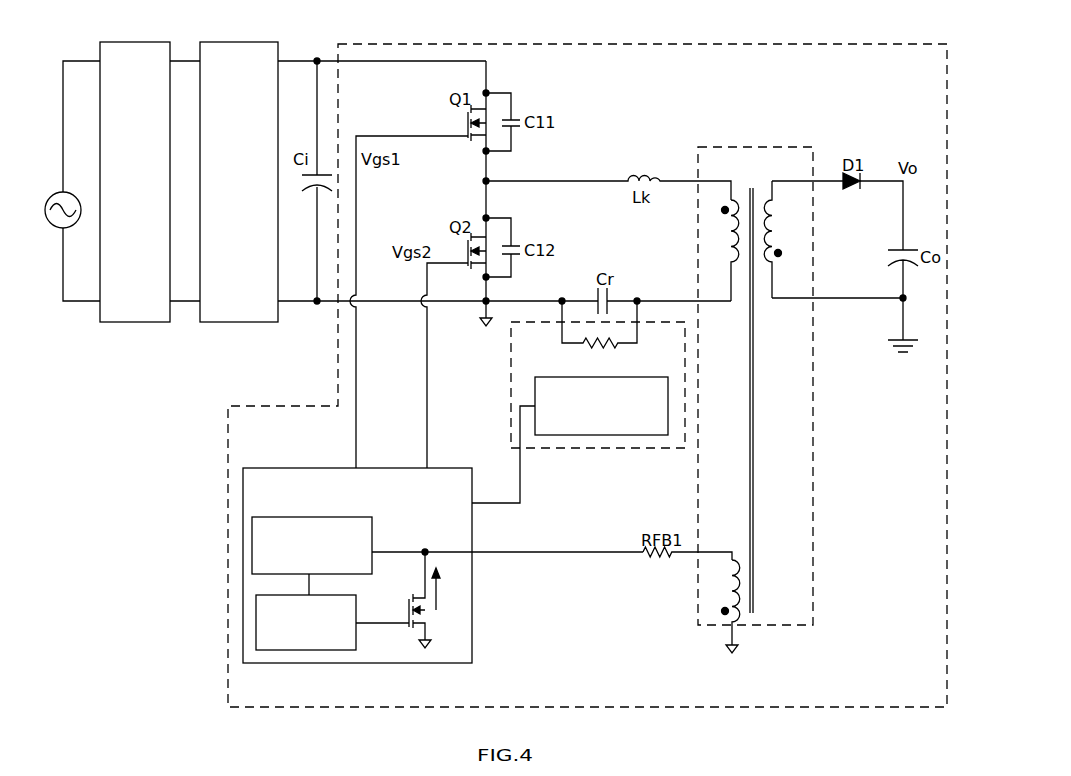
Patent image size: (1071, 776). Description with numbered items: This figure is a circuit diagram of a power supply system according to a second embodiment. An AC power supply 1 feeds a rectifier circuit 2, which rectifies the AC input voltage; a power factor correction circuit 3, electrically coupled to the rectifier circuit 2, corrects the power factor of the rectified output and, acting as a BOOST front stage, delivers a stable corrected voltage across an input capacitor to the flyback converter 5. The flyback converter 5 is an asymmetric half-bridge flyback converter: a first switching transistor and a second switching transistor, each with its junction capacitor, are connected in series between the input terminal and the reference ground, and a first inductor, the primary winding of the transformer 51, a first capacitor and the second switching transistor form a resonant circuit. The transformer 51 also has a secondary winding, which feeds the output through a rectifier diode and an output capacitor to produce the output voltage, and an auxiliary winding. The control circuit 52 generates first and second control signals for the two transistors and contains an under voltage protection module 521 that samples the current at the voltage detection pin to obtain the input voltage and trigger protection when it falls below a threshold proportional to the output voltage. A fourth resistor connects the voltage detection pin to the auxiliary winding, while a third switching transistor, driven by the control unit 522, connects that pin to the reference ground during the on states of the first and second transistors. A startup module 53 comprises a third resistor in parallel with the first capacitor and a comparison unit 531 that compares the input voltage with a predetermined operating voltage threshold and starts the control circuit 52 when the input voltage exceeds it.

The AC power supply 1 is at (52, 194).
The rectifier circuit 2 is at (150, 182).
The power factor correction circuit 3 is at (381, 182).
The flyback converter 5 is at (574, 49).
The transformer 51 is at (743, 152).
The control circuit 52 is at (443, 565).
The under voltage protection module 521 is at (312, 545).
The control unit 522 is at (306, 622).
The startup module 53 is at (578, 402).
The comparison unit 531 is at (601, 406).